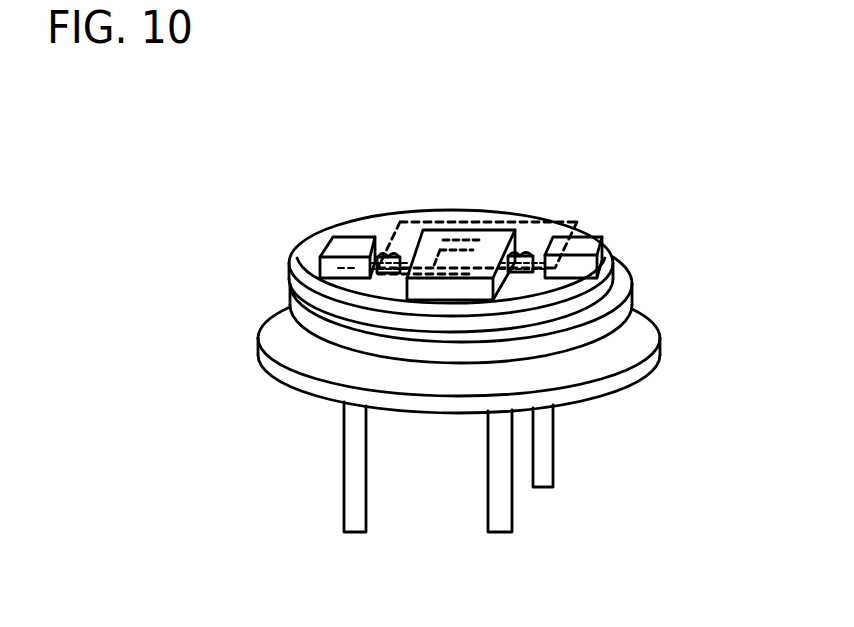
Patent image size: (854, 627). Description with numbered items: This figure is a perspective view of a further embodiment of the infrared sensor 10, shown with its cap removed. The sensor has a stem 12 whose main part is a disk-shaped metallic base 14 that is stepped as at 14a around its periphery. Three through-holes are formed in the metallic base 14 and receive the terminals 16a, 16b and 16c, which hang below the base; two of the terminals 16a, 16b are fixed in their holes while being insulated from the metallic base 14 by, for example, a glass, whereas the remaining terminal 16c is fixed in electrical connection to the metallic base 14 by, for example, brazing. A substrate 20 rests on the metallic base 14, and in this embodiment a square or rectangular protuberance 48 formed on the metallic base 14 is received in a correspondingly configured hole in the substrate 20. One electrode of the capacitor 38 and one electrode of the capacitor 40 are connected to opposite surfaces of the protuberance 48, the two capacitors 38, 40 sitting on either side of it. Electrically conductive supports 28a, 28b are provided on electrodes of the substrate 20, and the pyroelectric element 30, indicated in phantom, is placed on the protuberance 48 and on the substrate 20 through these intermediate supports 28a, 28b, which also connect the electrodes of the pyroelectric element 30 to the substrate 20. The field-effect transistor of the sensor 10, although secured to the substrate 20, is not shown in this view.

The infrared sensor 10 is at (179, 142).
The stem 12 is at (660, 352).
The metallic base 14 is at (620, 286).
The step 14a is at (631, 312).
The terminal 16a is at (351, 503).
The terminal 16b is at (496, 512).
The terminal 16c is at (555, 467).
The substrate 20 is at (613, 251).
The support 28a is at (590, 237).
The support 28b is at (333, 238).
The pyroelectric element 30 is at (455, 236).
The capacitor 38 is at (399, 255).
The capacitor 40 is at (533, 248).
The protuberance 48 is at (413, 288).